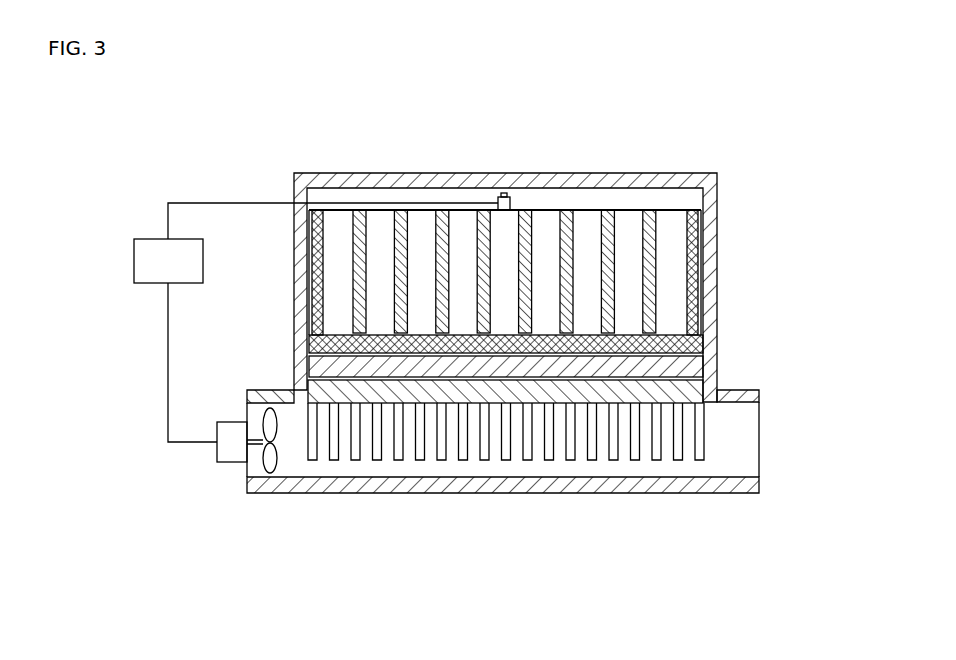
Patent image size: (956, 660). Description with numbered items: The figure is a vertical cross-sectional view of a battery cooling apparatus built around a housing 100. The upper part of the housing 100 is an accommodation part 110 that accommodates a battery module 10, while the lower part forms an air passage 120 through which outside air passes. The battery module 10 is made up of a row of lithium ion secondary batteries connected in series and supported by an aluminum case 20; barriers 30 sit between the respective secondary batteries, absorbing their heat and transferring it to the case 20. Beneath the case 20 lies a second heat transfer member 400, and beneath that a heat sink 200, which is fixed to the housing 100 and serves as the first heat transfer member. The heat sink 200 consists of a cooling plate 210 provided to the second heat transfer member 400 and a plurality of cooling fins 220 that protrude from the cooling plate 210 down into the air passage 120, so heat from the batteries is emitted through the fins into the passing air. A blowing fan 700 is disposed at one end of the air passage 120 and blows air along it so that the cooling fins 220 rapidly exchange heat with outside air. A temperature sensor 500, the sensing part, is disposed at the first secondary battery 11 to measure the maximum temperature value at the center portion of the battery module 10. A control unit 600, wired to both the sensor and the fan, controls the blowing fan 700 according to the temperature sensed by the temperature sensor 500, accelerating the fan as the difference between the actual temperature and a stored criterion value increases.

The housing 100 is at (537, 300).
The accommodation part 110 is at (684, 170).
The air passage 120 is at (744, 442).
The battery module 10 is at (463, 221).
The first secondary battery 11 is at (533, 240).
The case 20 is at (325, 348).
The barriers 30 is at (393, 302).
The heat sink 200 is at (506, 501).
The cooling plate 210 is at (363, 392).
The cooling fins 220 is at (427, 456).
The second heat transfer member 400 is at (308, 365).
The temperature sensor 500 is at (505, 193).
The control unit 600 is at (134, 258).
The blowing fan 700 is at (259, 469).